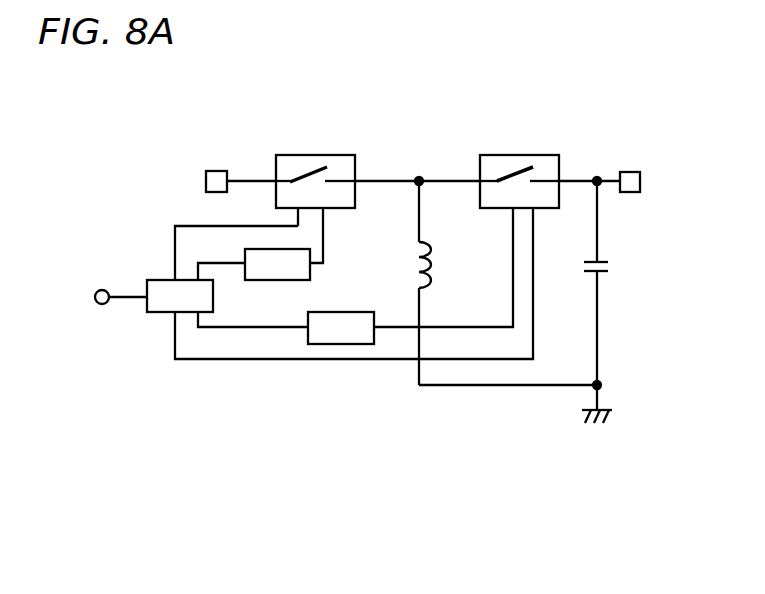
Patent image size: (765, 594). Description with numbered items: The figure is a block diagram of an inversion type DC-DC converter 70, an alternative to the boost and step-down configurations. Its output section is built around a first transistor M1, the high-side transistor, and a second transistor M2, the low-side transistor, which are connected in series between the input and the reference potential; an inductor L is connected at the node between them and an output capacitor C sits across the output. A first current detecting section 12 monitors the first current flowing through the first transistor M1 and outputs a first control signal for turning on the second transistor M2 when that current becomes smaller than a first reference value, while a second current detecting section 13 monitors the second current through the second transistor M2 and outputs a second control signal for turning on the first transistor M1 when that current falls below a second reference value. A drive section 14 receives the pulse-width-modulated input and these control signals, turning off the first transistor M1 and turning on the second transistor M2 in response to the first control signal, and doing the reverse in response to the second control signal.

The inversion type DC-DC converter 70 is at (618, 136).
The first transistor M1 is at (308, 155).
The second transistor M2 is at (512, 155).
The inductor L is at (433, 264).
The output capacitor C is at (610, 268).
The drive section 14 is at (167, 279).
The first current detecting section 12 is at (315, 252).
The second current detecting section 13 is at (347, 312).